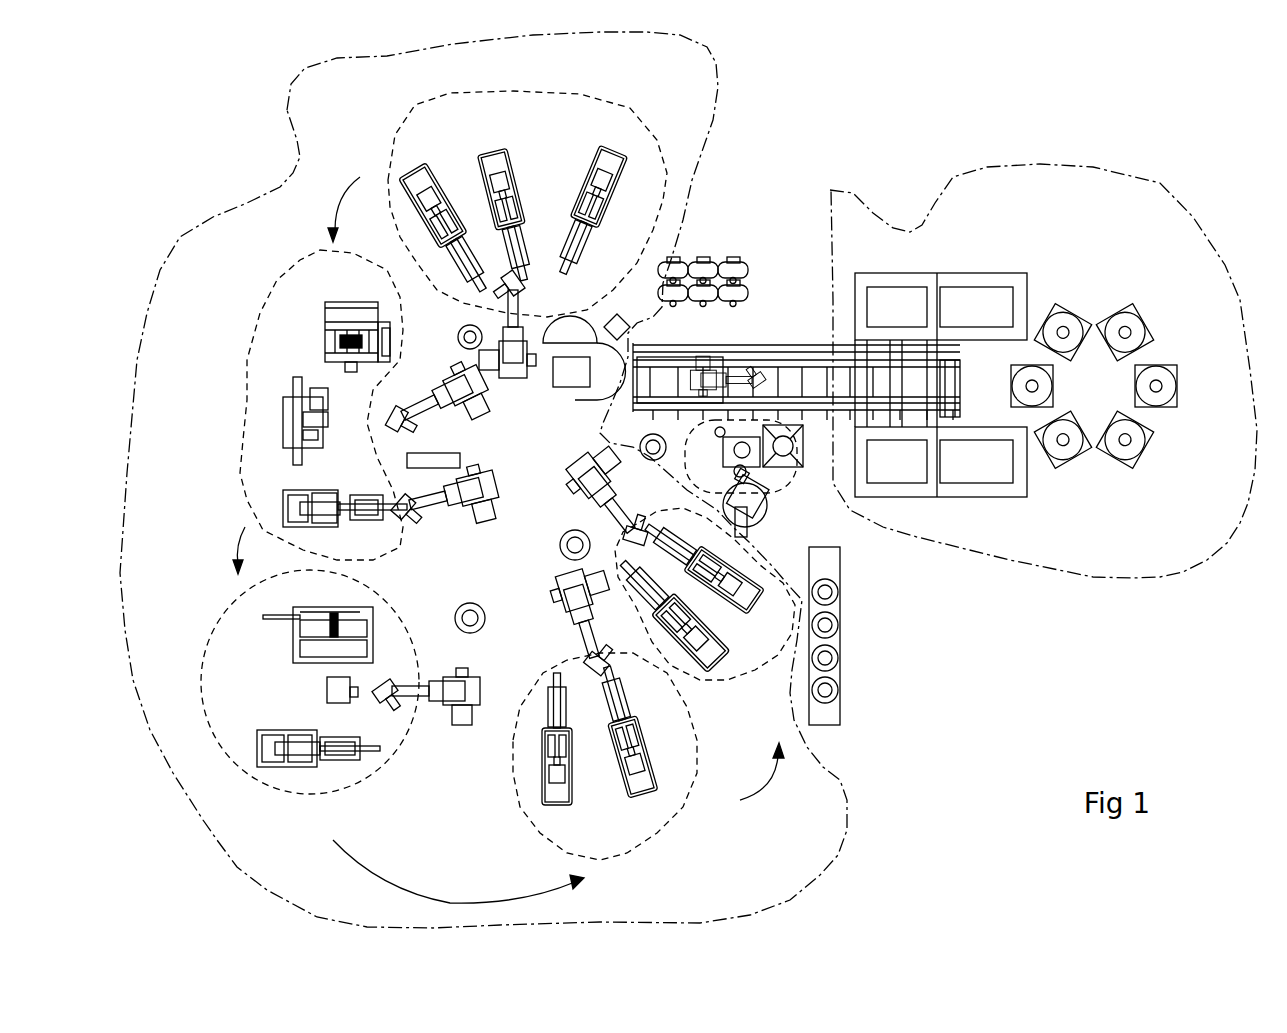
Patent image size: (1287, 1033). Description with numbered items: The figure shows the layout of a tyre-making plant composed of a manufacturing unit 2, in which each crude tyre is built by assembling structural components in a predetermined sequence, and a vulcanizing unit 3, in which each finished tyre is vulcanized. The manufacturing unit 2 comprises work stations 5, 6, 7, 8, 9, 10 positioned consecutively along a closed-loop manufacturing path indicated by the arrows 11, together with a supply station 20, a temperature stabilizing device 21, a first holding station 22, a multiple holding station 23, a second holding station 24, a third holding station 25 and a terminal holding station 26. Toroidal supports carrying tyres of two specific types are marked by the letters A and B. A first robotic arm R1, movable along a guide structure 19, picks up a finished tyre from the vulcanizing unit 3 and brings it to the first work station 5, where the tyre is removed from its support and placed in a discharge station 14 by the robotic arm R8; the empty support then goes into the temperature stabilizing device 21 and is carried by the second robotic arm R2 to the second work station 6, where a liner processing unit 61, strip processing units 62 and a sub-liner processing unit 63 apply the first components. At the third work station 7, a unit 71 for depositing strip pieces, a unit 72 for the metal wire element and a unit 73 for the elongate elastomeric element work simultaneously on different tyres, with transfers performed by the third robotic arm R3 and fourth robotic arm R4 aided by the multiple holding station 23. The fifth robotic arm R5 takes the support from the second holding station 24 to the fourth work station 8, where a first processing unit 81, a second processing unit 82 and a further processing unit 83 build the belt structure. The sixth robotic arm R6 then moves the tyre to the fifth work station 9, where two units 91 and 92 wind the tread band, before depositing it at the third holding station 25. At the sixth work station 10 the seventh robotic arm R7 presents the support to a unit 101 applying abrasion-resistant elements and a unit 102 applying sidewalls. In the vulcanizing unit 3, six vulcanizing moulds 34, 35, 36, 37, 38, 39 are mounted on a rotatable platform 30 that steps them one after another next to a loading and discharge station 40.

The manufacturing unit 2 is at (283, 187).
The vulcanizing unit 3 is at (907, 230).
The first work station 5 is at (800, 493).
The second work station 6 is at (387, 163).
The third work station 7 is at (257, 320).
The fourth work station 8 is at (350, 787).
The fifth work station 9 is at (627, 857).
The sixth work station 10 is at (843, 783).
The arrows 11 is at (508, 540).
The discharge station 14 is at (841, 655).
The guide structure 19 is at (812, 347).
The supply station 20 is at (670, 264).
The temperature stabilizing device 21 is at (570, 323).
The first holding station 22 is at (468, 337).
The multiple holding station 23 is at (420, 453).
The second holding station 24 is at (483, 620).
The third holding station 25 is at (583, 553).
The terminal holding station 26 is at (640, 447).
The rotatable platform 30 is at (1167, 357).
The vulcanizing mould 34 is at (1063, 440).
The vulcanizing mould 35 is at (1118, 455).
The vulcanizing mould 36 is at (1156, 388).
The vulcanizing mould 37 is at (1125, 330).
The vulcanizing mould 38 is at (1063, 330).
The vulcanizing mould 39 is at (1032, 385).
The loading and discharge station 40 is at (1000, 387).
The liner processing unit 61 is at (585, 163).
The strip processing unit 62 is at (510, 165).
The sub-liner processing unit 63 is at (432, 185).
The unit for depositing strip pieces 71 is at (337, 307).
The unit for depositing metal wire element 72 is at (320, 403).
The unit for depositing elongate elastomeric element 73 is at (283, 503).
The first processing unit 81 is at (293, 767).
The second processing unit 82 is at (293, 630).
The further processing unit 83 is at (327, 690).
The tread band unit 91 is at (560, 803).
The tread band unit 92 is at (657, 747).
The abrasion-resistant element unit 101 is at (707, 657).
The sidewall unit 102 is at (767, 663).
The first robotic arm R1 is at (713, 380).
The second robotic arm R2 is at (513, 387).
The third robotic arm R3 is at (447, 397).
The fourth robotic arm R4 is at (490, 497).
The fifth robotic arm R5 is at (423, 703).
The sixth robotic arm R6 is at (567, 587).
The seventh robotic arm R7 is at (605, 507).
The robotic arm R8 is at (748, 512).
The type A tyre with toroidal support A is at (557, 283).
The type B tyre with toroidal support B is at (327, 348).